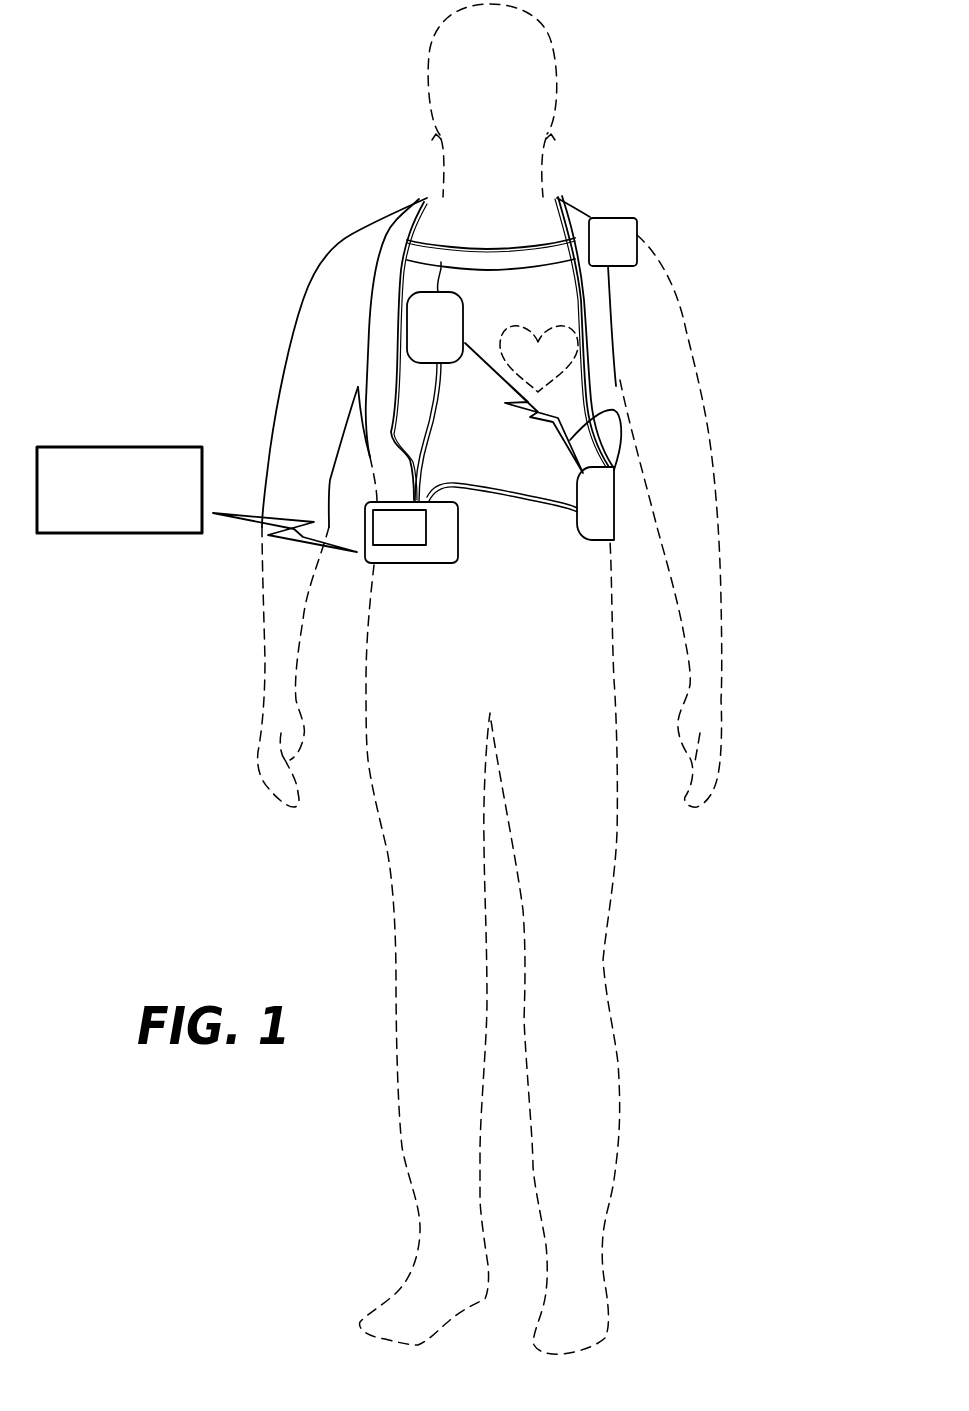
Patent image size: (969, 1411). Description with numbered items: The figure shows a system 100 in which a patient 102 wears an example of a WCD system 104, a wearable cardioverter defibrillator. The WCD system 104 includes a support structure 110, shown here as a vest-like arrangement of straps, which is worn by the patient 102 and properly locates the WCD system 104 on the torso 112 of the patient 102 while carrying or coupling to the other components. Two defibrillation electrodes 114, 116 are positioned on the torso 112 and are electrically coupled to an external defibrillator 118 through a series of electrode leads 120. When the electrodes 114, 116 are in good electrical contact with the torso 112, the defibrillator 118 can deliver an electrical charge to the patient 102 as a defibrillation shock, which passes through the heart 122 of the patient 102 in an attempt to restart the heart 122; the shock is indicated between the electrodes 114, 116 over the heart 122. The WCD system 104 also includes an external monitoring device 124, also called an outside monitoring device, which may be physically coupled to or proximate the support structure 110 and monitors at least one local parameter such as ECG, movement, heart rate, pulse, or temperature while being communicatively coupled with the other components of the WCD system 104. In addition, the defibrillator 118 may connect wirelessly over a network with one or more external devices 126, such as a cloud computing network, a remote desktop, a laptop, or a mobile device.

The system 100 is at (664, 69).
The patient 102 is at (427, 77).
The WCD system 104 is at (540, 240).
The support structure 110 is at (609, 352).
The torso 112 is at (570, 440).
The defibrillation electrode 114 is at (605, 488).
The defibrillation electrode 116 is at (416, 323).
The external defibrillator 118 is at (390, 563).
The electrode lead 120 is at (435, 400).
The heart 122 is at (588, 314).
The external monitoring device 124 is at (618, 222).
The external device 126 is at (108, 447).